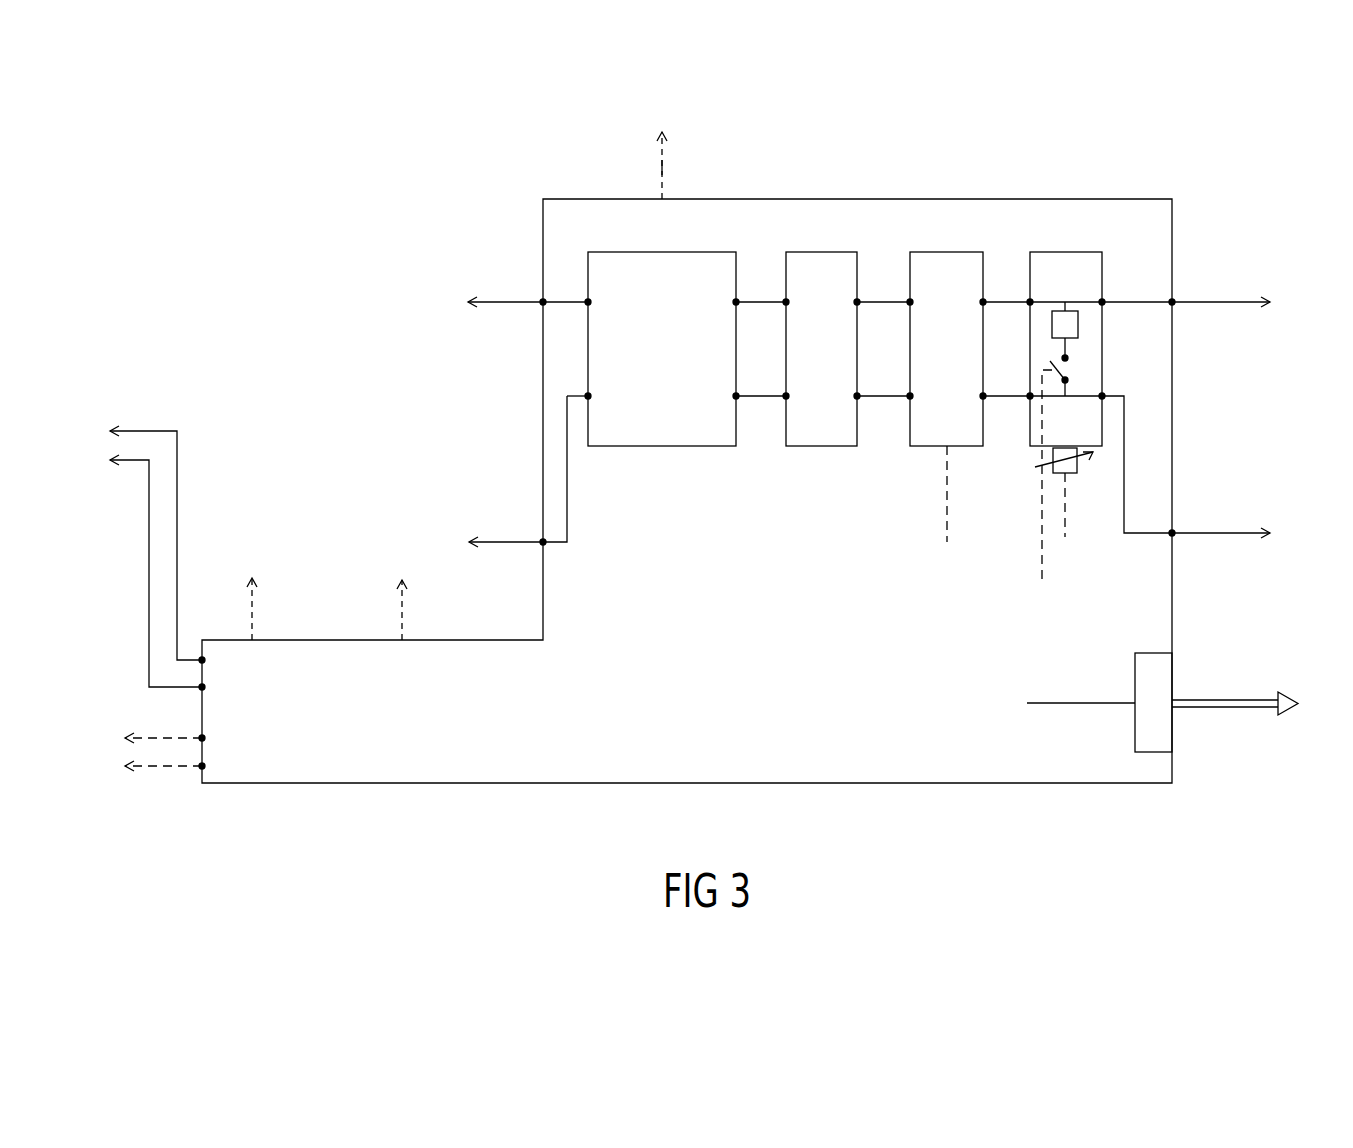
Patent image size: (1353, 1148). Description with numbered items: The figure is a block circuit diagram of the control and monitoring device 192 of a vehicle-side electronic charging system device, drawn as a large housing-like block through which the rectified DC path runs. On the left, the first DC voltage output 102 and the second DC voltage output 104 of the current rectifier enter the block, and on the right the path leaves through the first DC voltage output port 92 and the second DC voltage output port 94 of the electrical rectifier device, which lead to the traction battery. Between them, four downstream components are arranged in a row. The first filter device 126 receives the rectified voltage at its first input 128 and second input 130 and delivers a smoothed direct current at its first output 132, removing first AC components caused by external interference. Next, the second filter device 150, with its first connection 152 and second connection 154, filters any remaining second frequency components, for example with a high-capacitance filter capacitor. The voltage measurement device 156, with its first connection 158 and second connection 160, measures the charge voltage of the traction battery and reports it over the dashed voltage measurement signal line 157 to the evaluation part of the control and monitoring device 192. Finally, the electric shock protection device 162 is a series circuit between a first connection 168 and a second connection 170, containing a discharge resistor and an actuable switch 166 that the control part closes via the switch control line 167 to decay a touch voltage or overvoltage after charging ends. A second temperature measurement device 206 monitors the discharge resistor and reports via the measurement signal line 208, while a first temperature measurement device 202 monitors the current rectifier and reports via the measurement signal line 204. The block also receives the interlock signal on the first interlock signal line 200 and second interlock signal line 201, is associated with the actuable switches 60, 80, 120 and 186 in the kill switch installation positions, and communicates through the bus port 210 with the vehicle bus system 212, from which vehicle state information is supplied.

The control and monitoring device 192 is at (388, 783).
The first DC voltage output 102 is at (506, 303).
The second DC voltage output 104 is at (497, 478).
The first DC voltage output port 92 is at (1200, 303).
The second DC voltage output port 94 is at (1200, 474).
The first filter device 126 is at (663, 446).
The first input 128 is at (588, 302).
The second input 130 is at (588, 396).
The first output 132 is at (736, 302).
The first connection 152 is at (786, 302).
The second connection 154 is at (786, 396).
The second filter device 150 is at (822, 446).
The first connection 158 is at (910, 302).
The second connection 160 is at (910, 396).
The voltage measurement device 156 is at (932, 446).
The voltage measurement signal line 157 is at (947, 525).
The first connection 168 is at (1030, 302).
The second connection 170 is at (1030, 396).
The electric shock protection device 162 is at (1065, 252).
The actuable switch 166 is at (1080, 366).
The switch control line 167 is at (1042, 558).
The second temperature measurement device 206 is at (1065, 478).
The measurement signal line 208 is at (1065, 535).
The first temperature measurement device 202 is at (663, 150).
The measurement signal line 204 is at (662, 167).
The second interlock signal line 201 is at (135, 539).
The first interlock signal line 200 is at (135, 567).
The actuable switch 80 is at (150, 740).
The actuable switch 60 is at (150, 770).
The actuable switch 186 is at (256, 592).
The actuable switch 120 is at (400, 593).
The vehicle bus system 212 is at (1223, 707).
The bus port 210 is at (1256, 706).